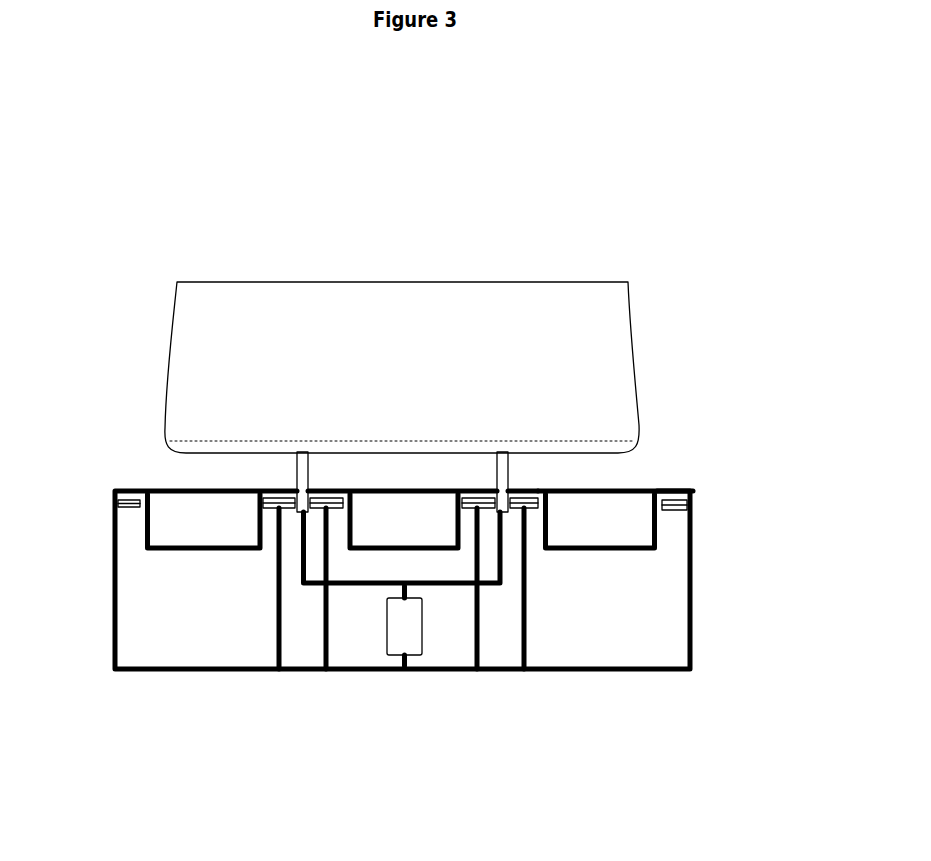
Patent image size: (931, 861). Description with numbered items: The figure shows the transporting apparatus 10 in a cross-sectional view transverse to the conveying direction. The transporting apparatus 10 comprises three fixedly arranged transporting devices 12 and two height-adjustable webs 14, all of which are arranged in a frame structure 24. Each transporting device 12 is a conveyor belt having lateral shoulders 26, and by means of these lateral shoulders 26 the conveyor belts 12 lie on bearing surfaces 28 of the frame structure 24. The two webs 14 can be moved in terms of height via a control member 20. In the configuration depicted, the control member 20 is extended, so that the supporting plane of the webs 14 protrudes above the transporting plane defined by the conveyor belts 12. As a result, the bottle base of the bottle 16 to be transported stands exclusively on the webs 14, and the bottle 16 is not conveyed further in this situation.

The transporting apparatus 10 is at (630, 196).
The transporting device 12 is at (148, 537).
The height-adjustable web 14 is at (490, 458).
The bottle 16 is at (169, 382).
The control member 20 is at (408, 657).
The frame structure 24 is at (630, 671).
The lateral shoulder 26 is at (681, 489).
The bearing surface 28 is at (689, 500).